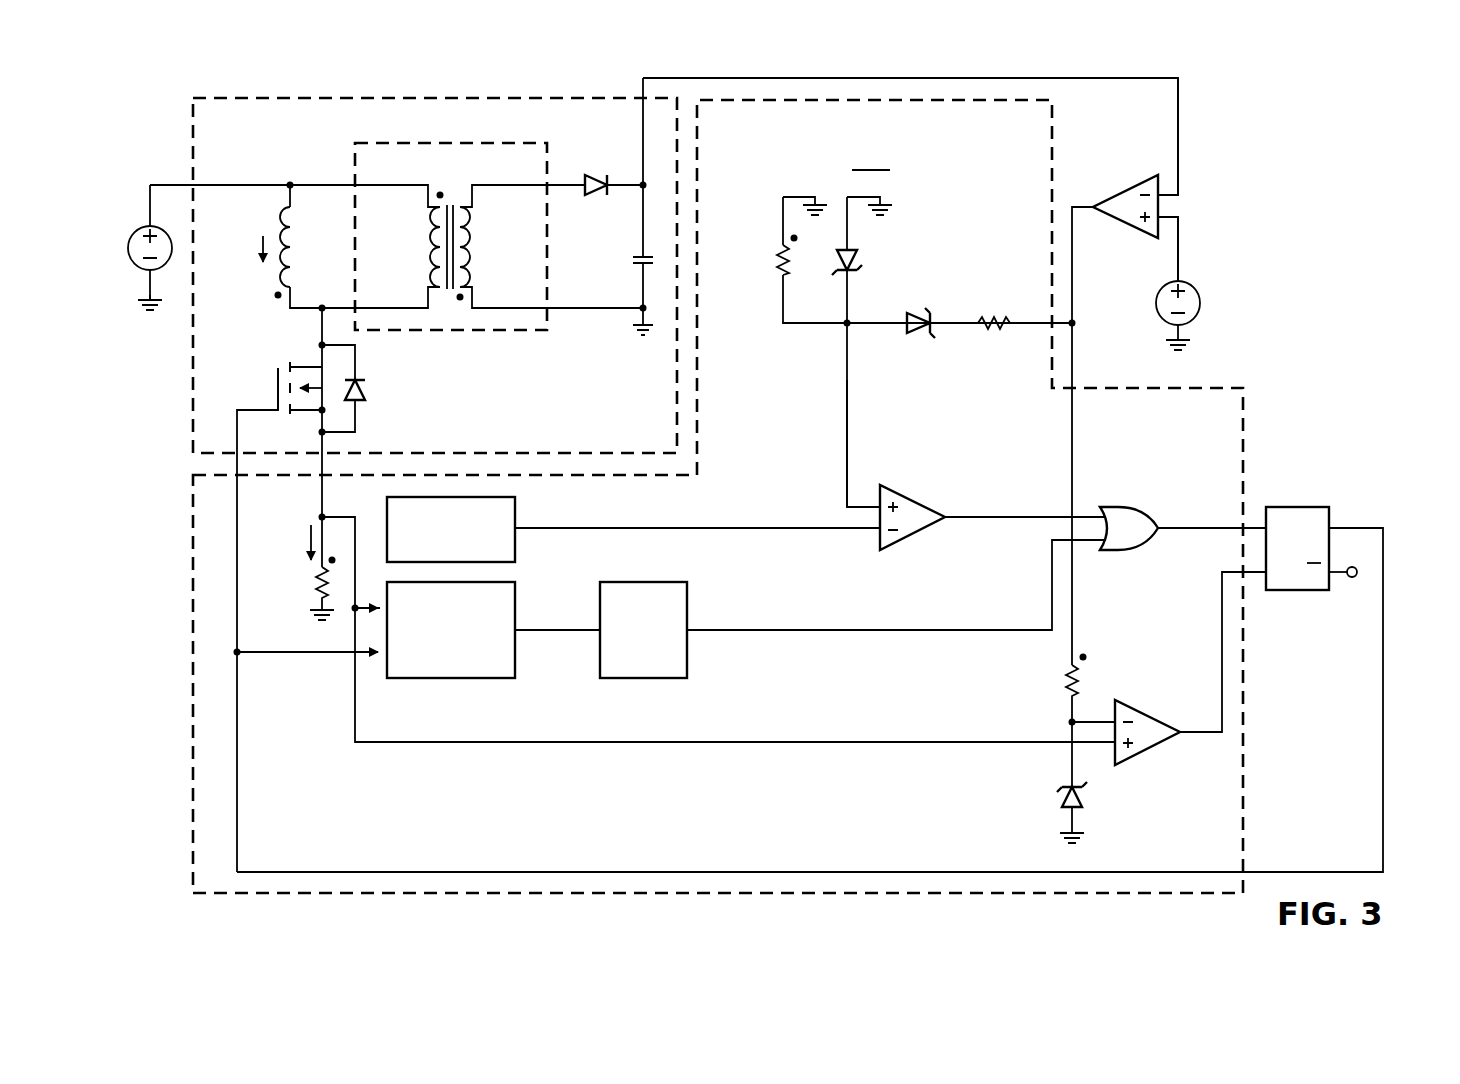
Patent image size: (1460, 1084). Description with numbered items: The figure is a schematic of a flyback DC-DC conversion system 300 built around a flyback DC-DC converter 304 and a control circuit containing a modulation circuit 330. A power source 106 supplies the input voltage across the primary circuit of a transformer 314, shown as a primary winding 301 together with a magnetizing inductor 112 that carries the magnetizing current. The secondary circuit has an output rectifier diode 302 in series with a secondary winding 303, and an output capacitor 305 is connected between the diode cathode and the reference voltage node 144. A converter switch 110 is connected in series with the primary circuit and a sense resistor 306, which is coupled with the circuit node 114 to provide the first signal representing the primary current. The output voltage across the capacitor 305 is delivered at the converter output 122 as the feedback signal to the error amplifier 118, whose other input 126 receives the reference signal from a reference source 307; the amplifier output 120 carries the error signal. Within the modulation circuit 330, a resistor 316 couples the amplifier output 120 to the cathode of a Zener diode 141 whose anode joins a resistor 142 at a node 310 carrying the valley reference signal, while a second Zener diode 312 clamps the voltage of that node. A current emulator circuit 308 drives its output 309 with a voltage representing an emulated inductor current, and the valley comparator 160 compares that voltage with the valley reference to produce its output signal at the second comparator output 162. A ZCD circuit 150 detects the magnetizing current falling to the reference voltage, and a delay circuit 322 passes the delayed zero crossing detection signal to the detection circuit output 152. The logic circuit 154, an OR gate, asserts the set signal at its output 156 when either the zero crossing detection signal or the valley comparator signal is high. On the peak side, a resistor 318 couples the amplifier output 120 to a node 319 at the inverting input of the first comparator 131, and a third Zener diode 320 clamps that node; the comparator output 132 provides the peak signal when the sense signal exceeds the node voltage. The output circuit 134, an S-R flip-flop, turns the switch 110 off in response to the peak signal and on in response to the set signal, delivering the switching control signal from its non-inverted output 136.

The flyback DC-DC conversion system 300 is at (132, 100).
The flyback DC-DC converter 304 is at (362, 97).
The power source 106 is at (140, 236).
The reference voltage node 144 is at (140, 290).
The magnetizing inductor 112 is at (275, 225).
The transformer 314 is at (463, 334).
The primary winding 301 is at (438, 235).
The secondary winding 303 is at (465, 262).
The output rectifier diode 302 is at (597, 195).
The output capacitor 305 is at (633, 258).
The converter switch 110 is at (275, 380).
The sense resistor 306 is at (315, 578).
The circuit node 114 is at (355, 725).
The current emulator circuit 308 is at (518, 540).
The ZCD circuit 150 is at (518, 642).
The delay circuit 322 is at (645, 680).
The current emulator output 309 is at (760, 535).
The detection circuit output 152 is at (760, 635).
The modulation circuit 330 is at (890, 309).
The resistor 142 is at (775, 258).
The second Zener diode 312 is at (860, 258).
The Zener diode 141 is at (922, 335).
The resistor 316 is at (995, 335).
The node 310 is at (843, 428).
The error amplifier 118 is at (1130, 188).
The converter output 122 is at (1182, 165).
The second amplifier input 126 is at (1182, 262).
The reference source 307 is at (1202, 305).
The amplifier output 120 is at (1080, 282).
The valley comparator 160 is at (910, 540).
The second comparator output 162 is at (995, 522).
The logic circuit 154 is at (1135, 505).
The logic circuit output 156 is at (1180, 535).
The output circuit 134 is at (1290, 505).
The non-inverted output 136 is at (1385, 705).
The first comparator 131 is at (1148, 755).
The first output 132 is at (1222, 660).
The resistor 318 is at (1065, 678).
The node 319 is at (1068, 762).
The third Zener diode 320 is at (1062, 795).